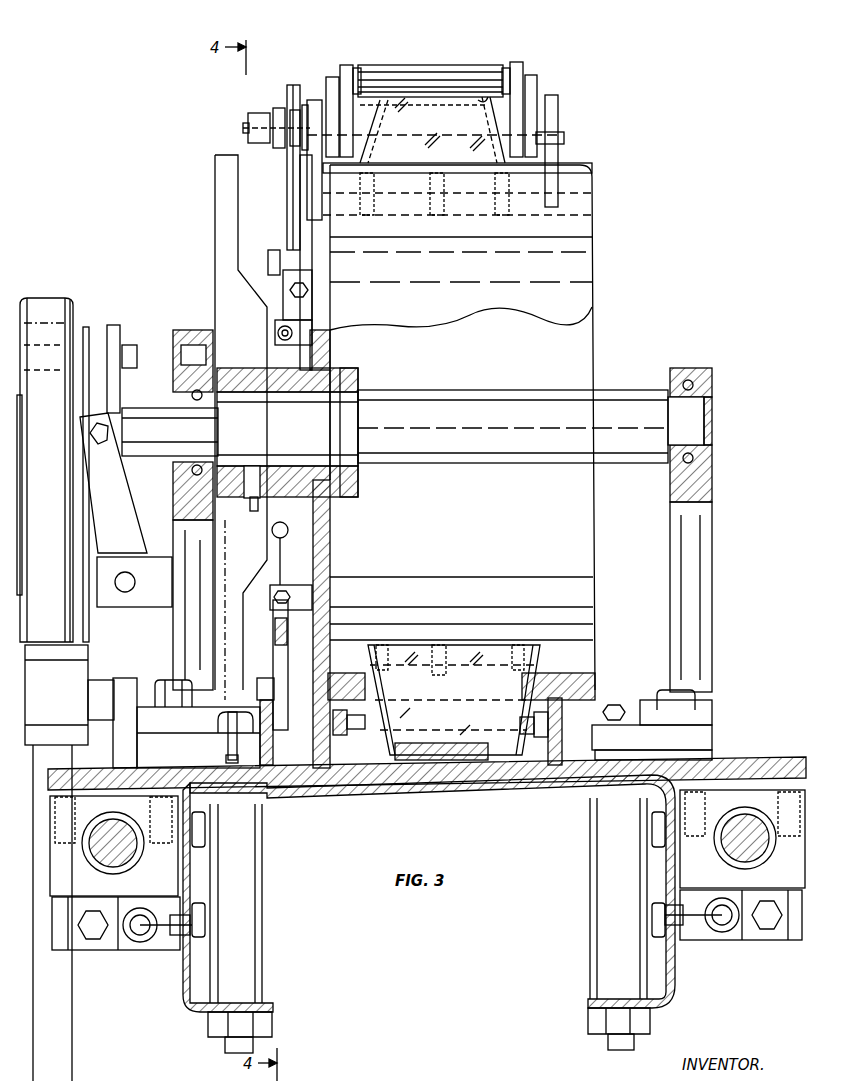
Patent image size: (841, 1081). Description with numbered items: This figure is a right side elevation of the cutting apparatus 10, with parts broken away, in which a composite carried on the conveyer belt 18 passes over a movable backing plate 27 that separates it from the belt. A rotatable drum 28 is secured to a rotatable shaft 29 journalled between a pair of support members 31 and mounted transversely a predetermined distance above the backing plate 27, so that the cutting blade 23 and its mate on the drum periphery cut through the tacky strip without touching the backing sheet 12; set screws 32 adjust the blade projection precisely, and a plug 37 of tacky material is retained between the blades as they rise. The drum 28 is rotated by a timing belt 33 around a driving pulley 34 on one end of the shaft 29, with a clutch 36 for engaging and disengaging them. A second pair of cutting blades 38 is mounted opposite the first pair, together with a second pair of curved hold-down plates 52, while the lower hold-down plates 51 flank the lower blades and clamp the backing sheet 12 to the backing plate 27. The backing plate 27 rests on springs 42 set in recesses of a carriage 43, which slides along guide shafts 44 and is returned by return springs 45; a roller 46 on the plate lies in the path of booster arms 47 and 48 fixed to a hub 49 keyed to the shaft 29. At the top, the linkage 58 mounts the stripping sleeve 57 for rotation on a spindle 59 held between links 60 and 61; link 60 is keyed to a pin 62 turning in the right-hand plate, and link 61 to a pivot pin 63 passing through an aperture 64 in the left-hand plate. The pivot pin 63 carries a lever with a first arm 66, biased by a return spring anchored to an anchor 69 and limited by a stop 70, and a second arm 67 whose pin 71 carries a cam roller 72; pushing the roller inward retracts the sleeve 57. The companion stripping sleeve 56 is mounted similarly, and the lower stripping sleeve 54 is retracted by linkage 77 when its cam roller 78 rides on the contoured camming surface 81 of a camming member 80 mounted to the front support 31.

The cutting apparatus 10 is at (663, 99).
The backing sheet 12 is at (528, 734).
The conveyer belt 18 is at (392, 800).
The cutting blade 23 is at (520, 755).
The movable backing plate 27 is at (752, 760).
The rotatable drum 28 is at (594, 198).
The rotatable shaft 29 is at (522, 390).
The support member 31 is at (173, 380).
The set screw 32 is at (382, 645).
The timing belt 33 is at (88, 626).
The driving pulley 34 is at (27, 298).
The clutch 36 is at (130, 497).
The plug 37 is at (390, 755).
The cutting blade 38 is at (428, 100).
The spring 42 is at (70, 845).
The carriage 43 is at (128, 796).
The guide shaft 44 is at (113, 820).
The return spring 45 is at (138, 942).
The roller 46 is at (212, 715).
The booster arm 47 is at (225, 617).
The booster arm 48 is at (215, 212).
The hub 49 is at (333, 368).
The hold-down plate 51 is at (330, 548).
The hold-down plate 52 is at (314, 100).
The stripping sleeve 54 is at (375, 735).
The stripping sleeve 56 is at (488, 105).
The stripping sleeve 57 is at (450, 66).
The linkage 58 is at (289, 51).
The spindle 59 is at (362, 66).
The link 60 is at (520, 62).
The link 61 is at (345, 65).
The pin 62 is at (564, 140).
The pivot pin 63 is at (370, 125).
The aperture 64 is at (304, 105).
The arm 66 is at (287, 187).
The arm 67 is at (294, 110).
The anchor 69 is at (312, 298).
The stop 70 is at (268, 258).
The pin 71 is at (278, 108).
The cam roller 72 is at (252, 113).
The linkage 77 is at (293, 633).
The cam roller 78 is at (266, 678).
The camming member 80 is at (274, 740).
The camming surface 81 is at (268, 695).